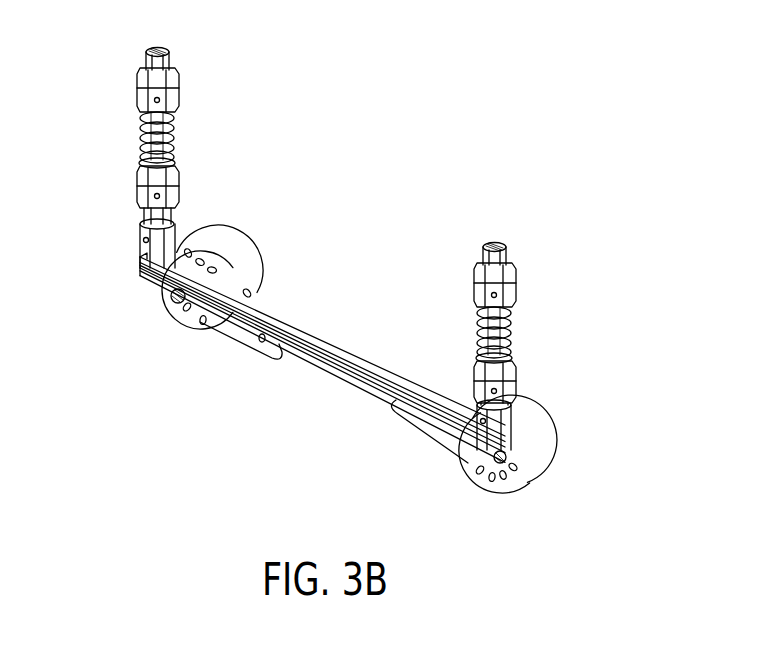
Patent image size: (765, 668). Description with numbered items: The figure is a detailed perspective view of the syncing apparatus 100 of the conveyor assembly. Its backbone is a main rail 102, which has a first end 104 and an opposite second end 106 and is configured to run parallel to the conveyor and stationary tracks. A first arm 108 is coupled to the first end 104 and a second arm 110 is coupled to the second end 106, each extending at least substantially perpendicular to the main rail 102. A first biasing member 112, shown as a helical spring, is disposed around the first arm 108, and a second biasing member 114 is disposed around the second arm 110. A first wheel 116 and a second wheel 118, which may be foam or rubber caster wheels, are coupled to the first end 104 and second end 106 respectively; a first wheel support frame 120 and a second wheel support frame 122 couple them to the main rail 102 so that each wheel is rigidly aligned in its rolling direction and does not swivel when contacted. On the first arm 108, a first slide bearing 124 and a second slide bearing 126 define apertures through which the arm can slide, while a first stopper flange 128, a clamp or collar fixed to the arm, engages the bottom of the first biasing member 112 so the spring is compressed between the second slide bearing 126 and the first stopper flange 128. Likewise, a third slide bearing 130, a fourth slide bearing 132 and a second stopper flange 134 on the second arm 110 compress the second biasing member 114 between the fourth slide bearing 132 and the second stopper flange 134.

The syncing apparatus 100 is at (501, 132).
The main rail 102 is at (317, 344).
The first end 104 is at (110, 266).
The second end 106 is at (578, 446).
The first arm 108 is at (170, 66).
The second arm 110 is at (528, 247).
The first biasing member 112 is at (176, 131).
The second biasing member 114 is at (528, 326).
The first wheel 116 is at (233, 252).
The second wheel 118 is at (531, 417).
The first wheel support frame 120 is at (240, 328).
The second wheel support frame 122 is at (420, 432).
The first slide bearing 124 is at (178, 187).
The second slide bearing 126 is at (137, 92).
The first stopper flange 128 is at (139, 167).
The third slide bearing 130 is at (525, 376).
The fourth slide bearing 132 is at (468, 284).
The second stopper flange 134 is at (466, 338).